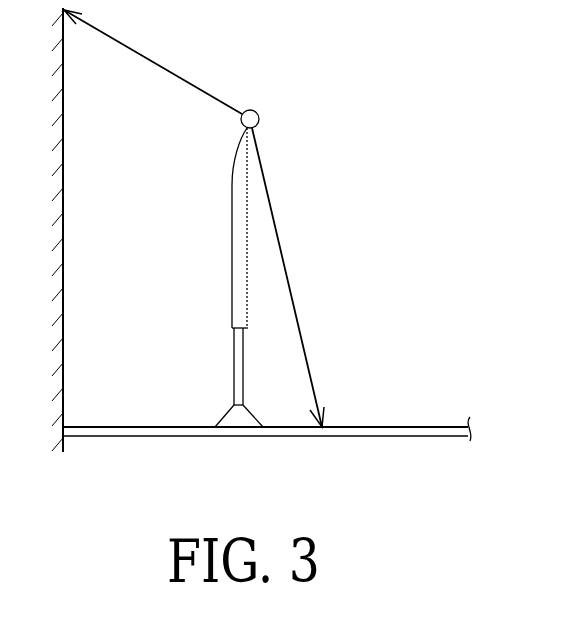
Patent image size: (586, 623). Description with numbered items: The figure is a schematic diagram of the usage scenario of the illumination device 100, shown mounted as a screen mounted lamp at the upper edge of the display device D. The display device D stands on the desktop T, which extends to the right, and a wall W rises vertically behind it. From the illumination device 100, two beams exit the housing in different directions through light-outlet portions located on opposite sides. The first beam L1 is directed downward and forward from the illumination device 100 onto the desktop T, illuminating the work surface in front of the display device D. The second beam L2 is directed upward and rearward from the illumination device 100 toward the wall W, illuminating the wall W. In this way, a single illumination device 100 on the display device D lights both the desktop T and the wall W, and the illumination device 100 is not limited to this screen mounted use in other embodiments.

The illumination device 100 is at (258, 112).
The display device D is at (238, 248).
The wall W is at (70, 176).
The desktop T is at (400, 424).
The first beam L1 is at (296, 302).
The second beam L2 is at (158, 60).